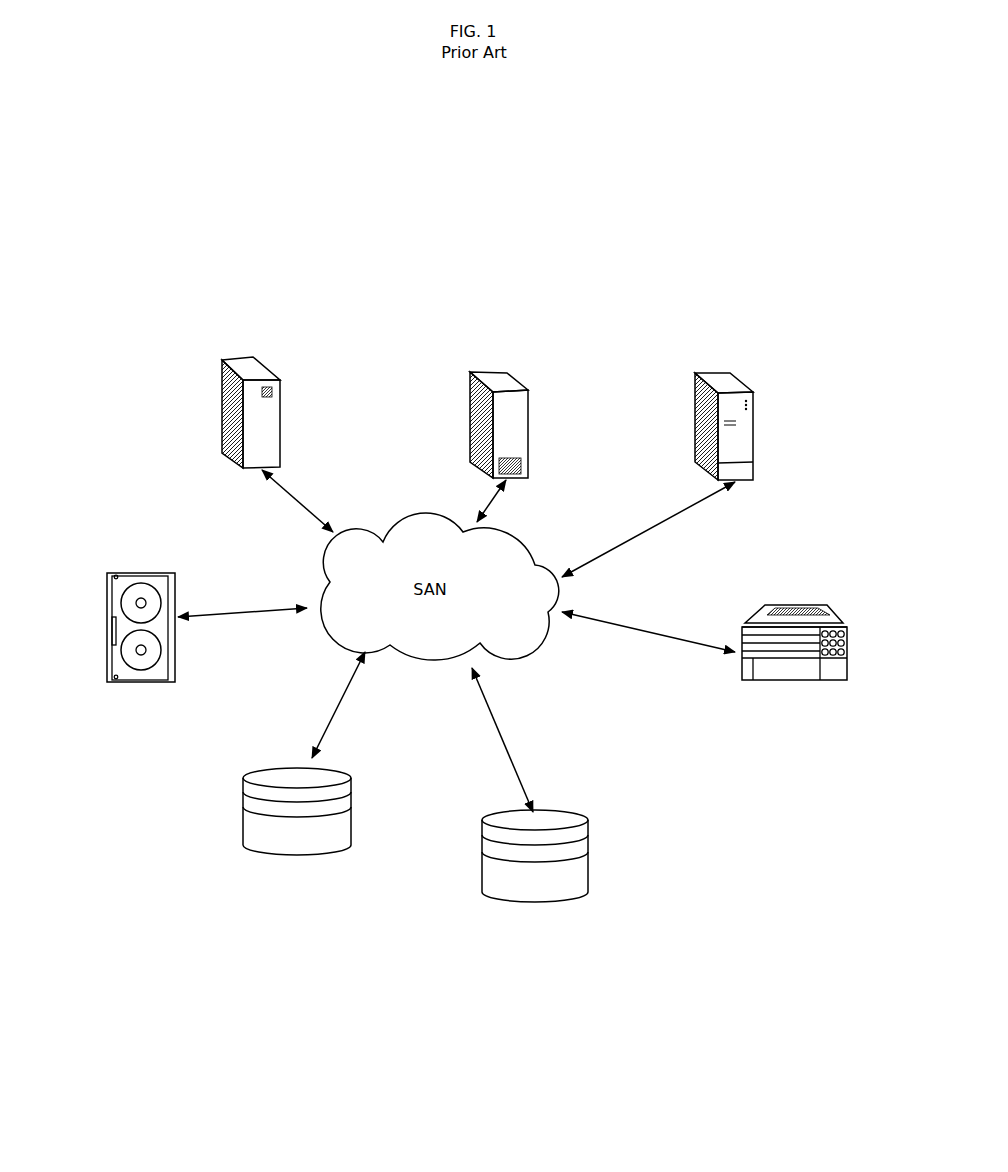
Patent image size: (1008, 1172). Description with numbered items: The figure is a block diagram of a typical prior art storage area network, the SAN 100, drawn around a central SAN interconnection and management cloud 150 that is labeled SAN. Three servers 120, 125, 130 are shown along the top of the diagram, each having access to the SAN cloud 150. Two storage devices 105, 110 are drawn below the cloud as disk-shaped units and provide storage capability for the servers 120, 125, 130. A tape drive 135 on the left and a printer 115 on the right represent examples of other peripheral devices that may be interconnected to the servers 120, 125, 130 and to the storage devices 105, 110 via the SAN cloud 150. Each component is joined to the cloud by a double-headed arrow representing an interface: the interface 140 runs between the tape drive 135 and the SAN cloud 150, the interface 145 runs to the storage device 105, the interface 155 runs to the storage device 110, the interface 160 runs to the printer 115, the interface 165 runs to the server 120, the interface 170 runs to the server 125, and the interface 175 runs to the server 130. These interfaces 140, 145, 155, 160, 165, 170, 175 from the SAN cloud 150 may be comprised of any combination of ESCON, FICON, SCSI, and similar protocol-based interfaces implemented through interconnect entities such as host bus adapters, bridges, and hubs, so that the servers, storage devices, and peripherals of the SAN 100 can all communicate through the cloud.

The SAN 100 is at (157, 985).
The storage device 105 is at (243, 833).
The storage device 110 is at (482, 877).
The printer 115 is at (845, 640).
The server 120 is at (757, 438).
The server 125 is at (532, 437).
The server 130 is at (282, 425).
The tape drive 135 is at (105, 617).
The interface 140 is at (258, 607).
The interface 145 is at (328, 728).
The SAN interconnection and management cloud 150 is at (450, 662).
The interface 155 is at (515, 770).
The interface 160 is at (613, 622).
The interface 165 is at (638, 537).
The interface 170 is at (495, 502).
The interface 175 is at (292, 500).